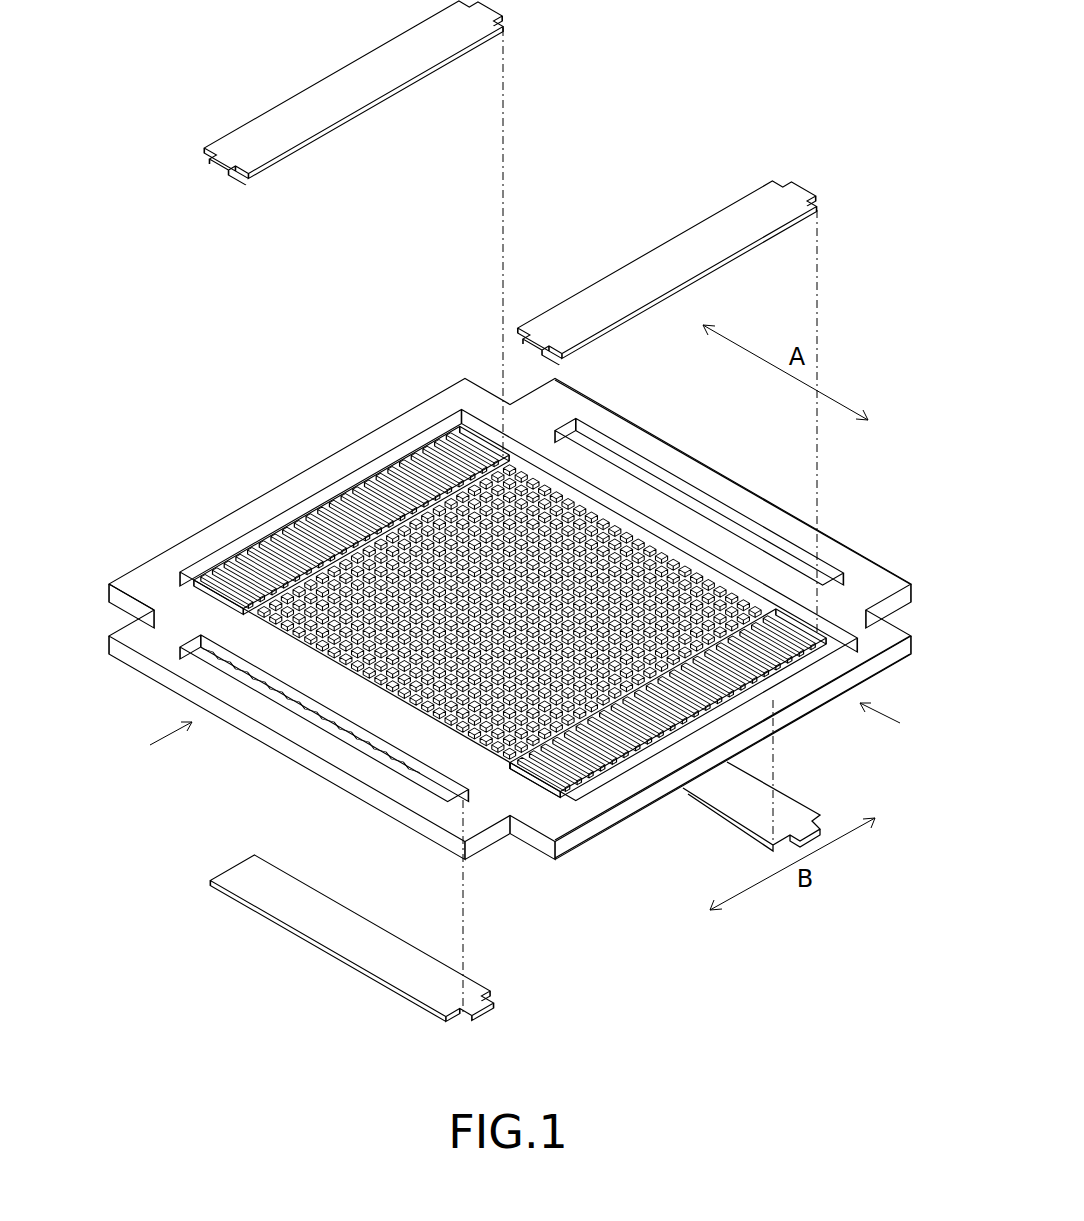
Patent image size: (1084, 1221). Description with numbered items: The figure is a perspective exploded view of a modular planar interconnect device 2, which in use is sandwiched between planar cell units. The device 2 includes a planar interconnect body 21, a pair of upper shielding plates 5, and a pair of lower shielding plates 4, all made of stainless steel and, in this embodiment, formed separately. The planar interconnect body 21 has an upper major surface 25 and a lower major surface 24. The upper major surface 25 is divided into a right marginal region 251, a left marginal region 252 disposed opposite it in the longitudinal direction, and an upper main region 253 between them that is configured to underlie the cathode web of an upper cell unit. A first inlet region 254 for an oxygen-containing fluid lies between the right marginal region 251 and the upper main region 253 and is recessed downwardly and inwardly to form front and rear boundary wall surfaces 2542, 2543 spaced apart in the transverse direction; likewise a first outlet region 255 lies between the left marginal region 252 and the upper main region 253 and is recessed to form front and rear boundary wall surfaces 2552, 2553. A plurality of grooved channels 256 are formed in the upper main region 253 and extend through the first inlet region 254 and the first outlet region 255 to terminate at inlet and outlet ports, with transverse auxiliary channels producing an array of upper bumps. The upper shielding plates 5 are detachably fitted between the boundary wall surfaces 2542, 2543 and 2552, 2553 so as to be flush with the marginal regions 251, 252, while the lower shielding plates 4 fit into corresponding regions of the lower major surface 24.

The modular planar interconnect device 2 is at (372, 418).
The planar interconnect body 21 is at (112, 588).
The lower major surface 24 is at (585, 847).
The upper major surface 25 is at (758, 498).
The right marginal region 251 is at (627, 787).
The left marginal region 252 is at (160, 595).
The upper main region 253 is at (598, 553).
The first inlet region 254 is at (553, 772).
The first outlet region 255 is at (272, 555).
The grooved channels 256 is at (428, 468).
The front boundary wall surface 2542 is at (523, 763).
The rear boundary wall surface 2543 is at (810, 632).
The front boundary wall surface 2552 is at (247, 603).
The rear boundary wall surface 2553 is at (469, 434).
The lower shielding plates 4 is at (672, 958).
The upper shielding plates 5 is at (672, 36).